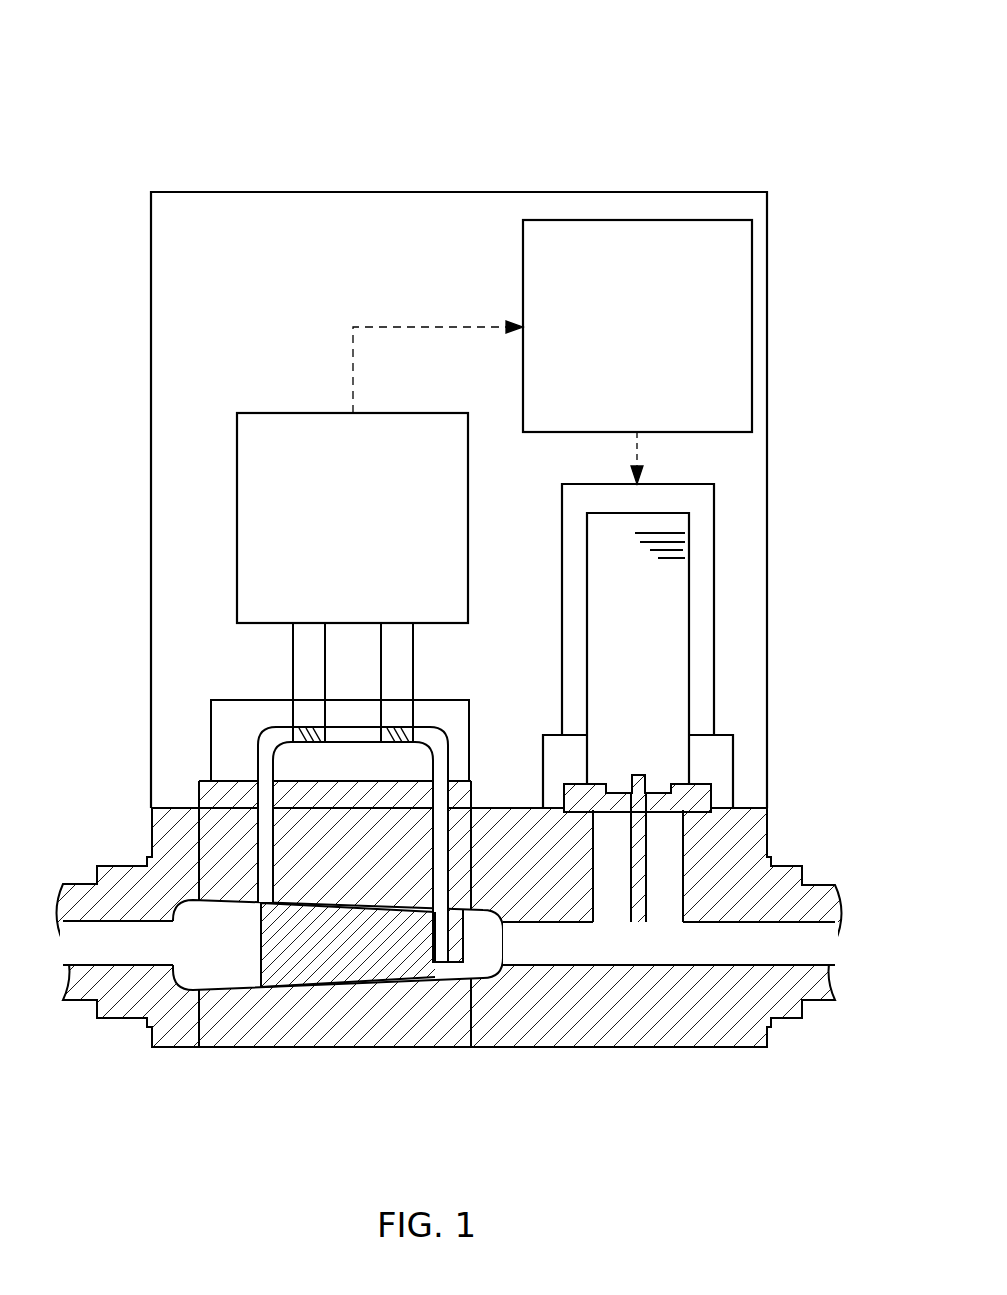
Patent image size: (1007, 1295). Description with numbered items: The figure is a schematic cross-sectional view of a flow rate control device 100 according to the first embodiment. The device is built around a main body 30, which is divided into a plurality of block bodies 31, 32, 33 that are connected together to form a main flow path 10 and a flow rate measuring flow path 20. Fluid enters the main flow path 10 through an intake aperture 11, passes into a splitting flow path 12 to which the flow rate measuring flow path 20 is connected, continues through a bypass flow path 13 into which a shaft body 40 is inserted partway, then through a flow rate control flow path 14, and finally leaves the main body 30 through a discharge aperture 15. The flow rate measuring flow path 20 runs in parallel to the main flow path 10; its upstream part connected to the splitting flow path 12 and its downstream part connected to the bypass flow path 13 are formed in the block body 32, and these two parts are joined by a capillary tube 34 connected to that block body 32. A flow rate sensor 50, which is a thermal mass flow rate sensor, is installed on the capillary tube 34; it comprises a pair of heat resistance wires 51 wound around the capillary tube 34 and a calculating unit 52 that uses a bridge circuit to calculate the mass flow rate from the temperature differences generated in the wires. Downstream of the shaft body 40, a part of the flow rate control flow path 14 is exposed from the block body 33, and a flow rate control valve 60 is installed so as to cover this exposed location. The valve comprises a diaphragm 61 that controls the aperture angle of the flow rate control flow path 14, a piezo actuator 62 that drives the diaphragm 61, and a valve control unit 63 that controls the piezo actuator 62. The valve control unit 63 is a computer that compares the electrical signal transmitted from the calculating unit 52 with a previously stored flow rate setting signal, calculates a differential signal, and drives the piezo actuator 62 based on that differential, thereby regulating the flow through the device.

The flow rate control device 100 is at (765, 115).
The main flow path 10 is at (485, 981).
The intake aperture 11 is at (114, 956).
The splitting flow path 12 is at (234, 956).
The bypass flow path 13 is at (502, 954).
The flow rate control flow path 14 is at (586, 954).
The discharge aperture 15 is at (819, 957).
The flow rate measuring flow path 20 is at (257, 752).
The main body 30 is at (762, 1047).
The block body 31 is at (178, 1047).
The block body 32 is at (402, 1047).
The block body 33 is at (645, 1047).
The capillary tube 34 is at (257, 768).
The shaft body 40 is at (335, 968).
The flow rate sensor 50 is at (292, 680).
The heat resistance wires 51 is at (323, 724).
The calculating unit 52 is at (352, 518).
The flow rate control valve 60 is at (740, 728).
The diaphragm 61 is at (700, 795).
The piezo actuator 62 is at (675, 617).
The valve control unit 63 is at (552, 352).